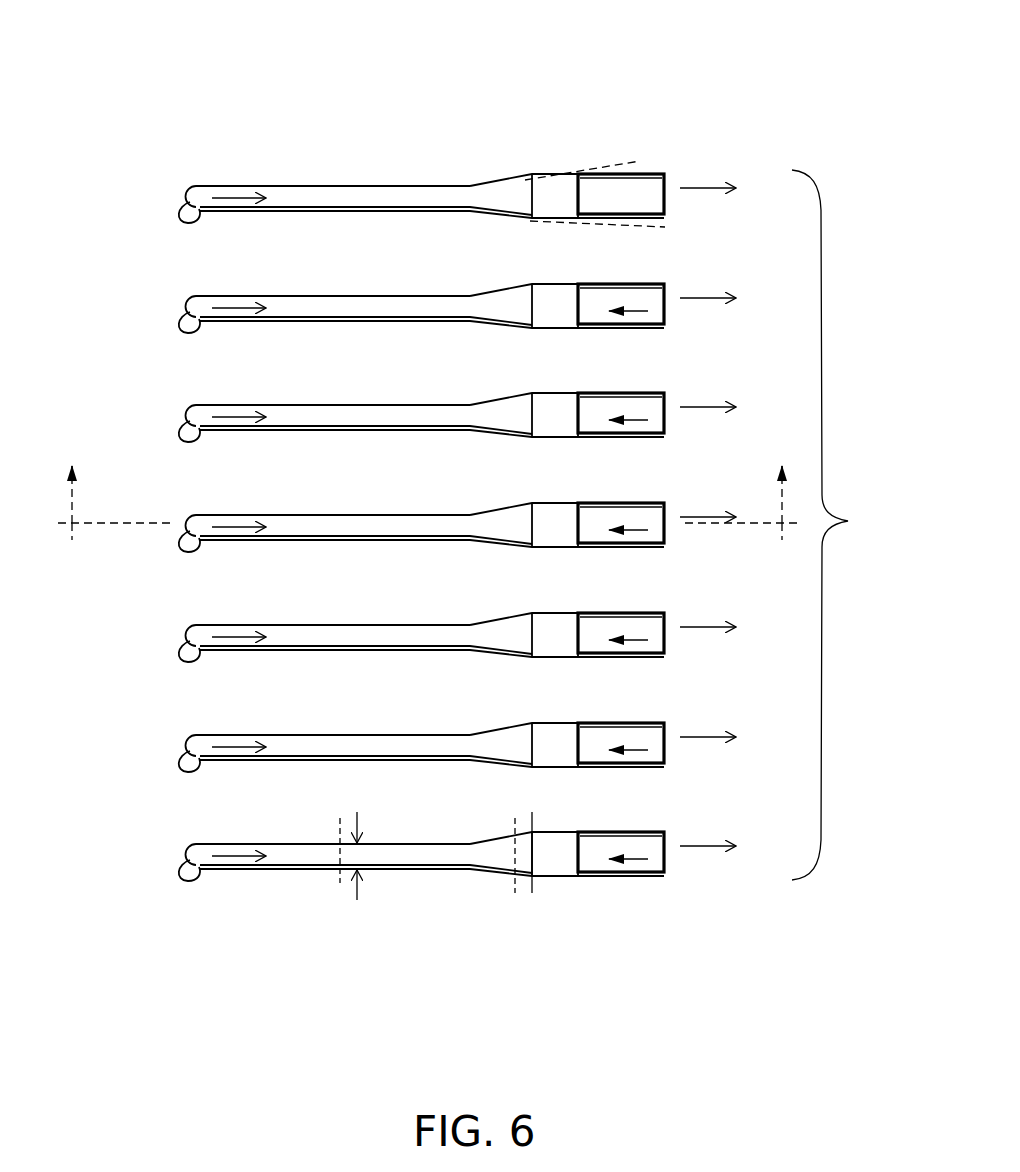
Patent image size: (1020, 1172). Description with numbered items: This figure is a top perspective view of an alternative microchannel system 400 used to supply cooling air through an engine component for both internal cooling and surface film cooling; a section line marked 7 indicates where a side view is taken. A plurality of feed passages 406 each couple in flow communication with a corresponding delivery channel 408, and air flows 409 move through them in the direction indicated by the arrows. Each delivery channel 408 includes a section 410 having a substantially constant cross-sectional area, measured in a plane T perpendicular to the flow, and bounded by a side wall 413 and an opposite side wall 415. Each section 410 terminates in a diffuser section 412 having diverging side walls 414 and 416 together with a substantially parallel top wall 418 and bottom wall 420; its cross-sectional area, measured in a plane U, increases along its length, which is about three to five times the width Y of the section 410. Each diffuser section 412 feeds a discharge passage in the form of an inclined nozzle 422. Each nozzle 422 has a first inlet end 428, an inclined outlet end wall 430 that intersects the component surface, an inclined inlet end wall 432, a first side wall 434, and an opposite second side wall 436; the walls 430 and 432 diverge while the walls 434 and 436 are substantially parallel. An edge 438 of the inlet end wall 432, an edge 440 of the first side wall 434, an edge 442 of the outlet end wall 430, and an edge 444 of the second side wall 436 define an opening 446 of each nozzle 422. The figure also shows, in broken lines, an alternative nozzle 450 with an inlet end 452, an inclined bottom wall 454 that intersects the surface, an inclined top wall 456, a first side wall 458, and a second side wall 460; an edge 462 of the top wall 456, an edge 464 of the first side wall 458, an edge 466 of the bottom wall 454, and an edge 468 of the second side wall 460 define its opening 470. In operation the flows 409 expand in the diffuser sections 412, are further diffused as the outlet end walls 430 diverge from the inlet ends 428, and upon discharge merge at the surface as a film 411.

The microchannel system 400 is at (194, 74).
The feed passage 406 is at (178, 211).
The delivery channel 408 is at (304, 192).
The air flow 409 is at (238, 198).
The section 410 is at (366, 198).
The film 411 is at (846, 525).
The diffuser section 412 is at (497, 194).
The side wall 413 is at (304, 841).
The side wall 414 is at (527, 836).
The side wall 415 is at (276, 879).
The side wall 416 is at (505, 873).
The top wall 418 is at (533, 822).
The bottom wall 420 is at (480, 879).
The inclined nozzle 422 is at (673, 327).
The first inlet end 428 is at (530, 882).
The inclined outlet end wall 430 is at (588, 873).
The inclined inlet end wall 432 is at (553, 876).
The first side wall 434 is at (593, 862).
The second side wall 436 is at (577, 830).
The edge 438 is at (567, 757).
The edge 440 is at (640, 764).
The edge 442 is at (667, 731).
The edge 444 is at (640, 722).
The opening 446 is at (664, 313).
The alternative nozzle 450 is at (646, 137).
The inlet end 452 is at (514, 178).
The inclined bottom wall 454 is at (637, 200).
The inclined top wall 456 is at (541, 188).
The first side wall 458 is at (590, 230).
The second side wall 460 is at (552, 186).
The edge 462 is at (563, 208).
The edge 464 is at (652, 228).
The edge 466 is at (655, 167).
The edge 468 is at (609, 166).
The opening 470 is at (646, 163).
The section line 7- 7 is at (425, 512).